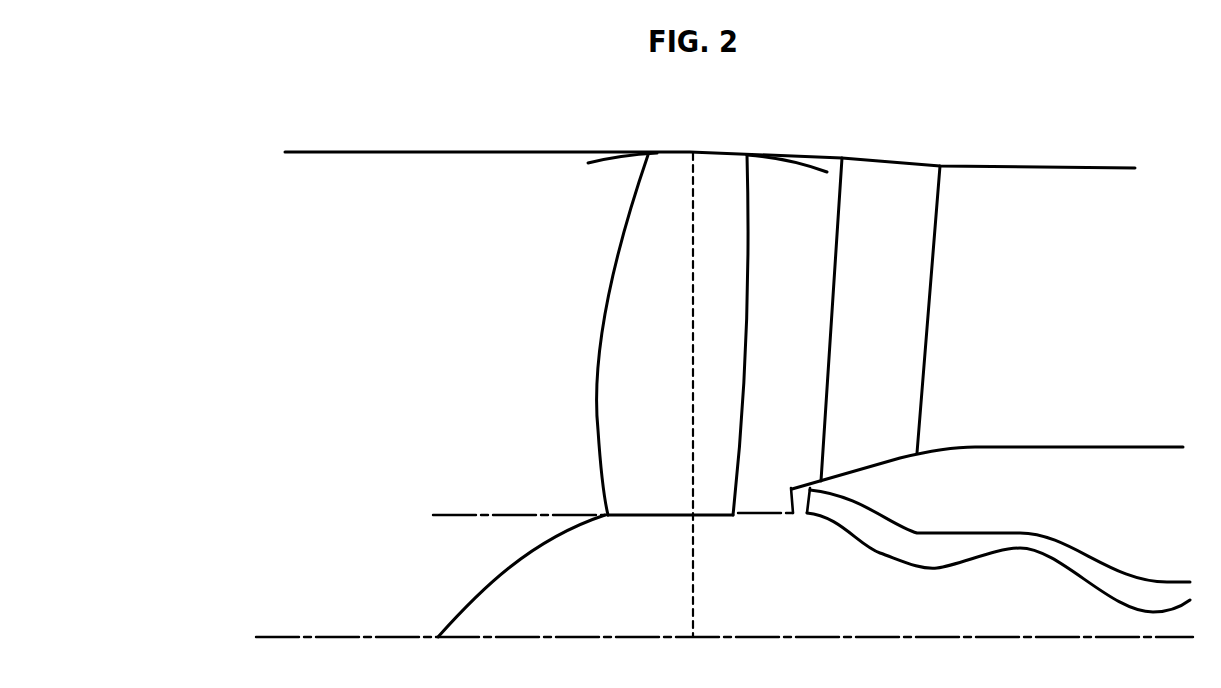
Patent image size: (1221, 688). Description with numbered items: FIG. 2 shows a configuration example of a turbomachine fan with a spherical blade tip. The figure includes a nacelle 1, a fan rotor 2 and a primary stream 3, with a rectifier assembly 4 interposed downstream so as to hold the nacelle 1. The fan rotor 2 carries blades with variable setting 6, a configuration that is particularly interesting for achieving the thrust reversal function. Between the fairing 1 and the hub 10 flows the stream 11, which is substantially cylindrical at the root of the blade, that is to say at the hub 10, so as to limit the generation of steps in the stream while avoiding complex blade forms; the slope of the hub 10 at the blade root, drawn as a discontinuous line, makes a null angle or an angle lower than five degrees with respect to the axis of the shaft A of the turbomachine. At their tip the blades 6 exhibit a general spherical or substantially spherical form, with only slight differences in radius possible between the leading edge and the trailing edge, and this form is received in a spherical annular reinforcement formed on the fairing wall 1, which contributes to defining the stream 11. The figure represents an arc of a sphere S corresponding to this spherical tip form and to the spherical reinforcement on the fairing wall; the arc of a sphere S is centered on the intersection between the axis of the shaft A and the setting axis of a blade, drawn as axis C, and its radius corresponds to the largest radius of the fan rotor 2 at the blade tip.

The nacelle 1 is at (684, 128).
The fan rotor 2 is at (633, 335).
The primary stream 3 is at (864, 532).
The rectifier assembly 4 is at (866, 352).
The blade with variable setting 6 is at (664, 354).
The hub 10 is at (455, 515).
The stream 11 is at (773, 352).
The axis of the shaft A is at (279, 637).
The setting axis C is at (692, 290).
The arc of a sphere S is at (611, 163).